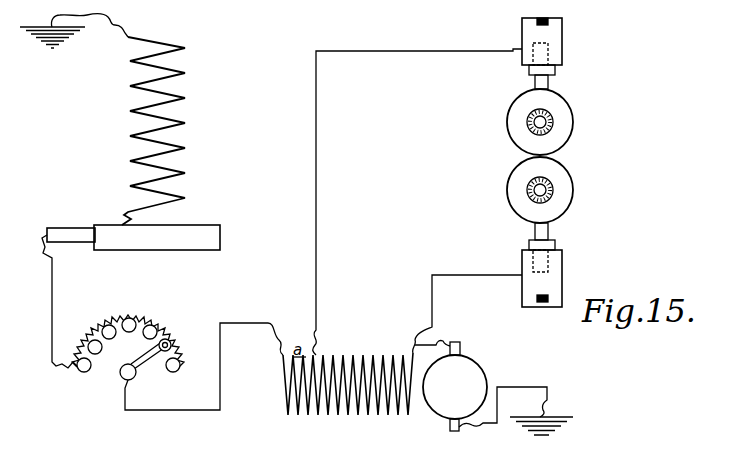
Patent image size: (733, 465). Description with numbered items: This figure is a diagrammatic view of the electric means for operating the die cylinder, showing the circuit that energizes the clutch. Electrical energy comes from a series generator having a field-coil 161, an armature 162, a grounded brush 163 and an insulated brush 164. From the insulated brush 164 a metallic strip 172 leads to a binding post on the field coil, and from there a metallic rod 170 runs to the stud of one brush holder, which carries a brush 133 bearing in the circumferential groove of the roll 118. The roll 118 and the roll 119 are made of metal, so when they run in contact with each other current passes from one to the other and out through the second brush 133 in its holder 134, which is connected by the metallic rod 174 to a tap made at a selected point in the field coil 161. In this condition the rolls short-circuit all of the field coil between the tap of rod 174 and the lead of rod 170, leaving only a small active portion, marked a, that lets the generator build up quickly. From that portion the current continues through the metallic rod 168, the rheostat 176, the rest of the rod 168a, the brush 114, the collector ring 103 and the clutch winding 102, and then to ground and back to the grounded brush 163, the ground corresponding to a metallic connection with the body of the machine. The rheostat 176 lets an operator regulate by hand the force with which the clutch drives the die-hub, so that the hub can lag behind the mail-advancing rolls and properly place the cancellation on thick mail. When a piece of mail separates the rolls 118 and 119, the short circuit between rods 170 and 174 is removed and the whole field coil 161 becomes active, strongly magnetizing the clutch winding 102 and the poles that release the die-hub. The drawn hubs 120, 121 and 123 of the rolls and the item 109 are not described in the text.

The clutch winding 102 is at (175, 118).
The collector ring 103 is at (210, 232).
The brush 114 is at (64, 238).
The rod 168a is at (53, 306).
The rheostat 176 is at (128, 347).
The metallic rod 168 is at (244, 322).
The metallic rod 174 is at (317, 190).
The field-coil 161 is at (336, 400).
The metallic rod 170 is at (450, 273).
The metallic strip 172 is at (443, 342).
The insulated brush 164 is at (463, 348).
The armature 162 is at (478, 375).
The grounded brush 163 is at (452, 432).
The holder 134 is at (553, 52).
The brush 133 is at (554, 82).
The roll 119 is at (566, 120).
The hub 121 is at (548, 116).
The bore 123 is at (545, 122).
The hub 120 is at (550, 186).
The roll 118 is at (560, 200).
The conductor 109 is at (162, 459).